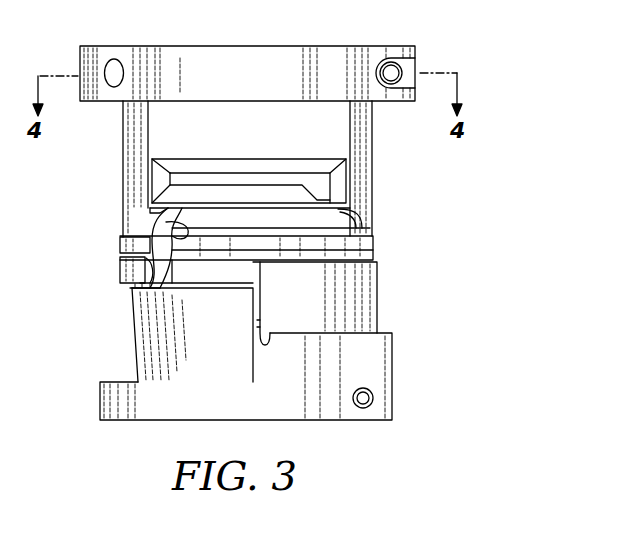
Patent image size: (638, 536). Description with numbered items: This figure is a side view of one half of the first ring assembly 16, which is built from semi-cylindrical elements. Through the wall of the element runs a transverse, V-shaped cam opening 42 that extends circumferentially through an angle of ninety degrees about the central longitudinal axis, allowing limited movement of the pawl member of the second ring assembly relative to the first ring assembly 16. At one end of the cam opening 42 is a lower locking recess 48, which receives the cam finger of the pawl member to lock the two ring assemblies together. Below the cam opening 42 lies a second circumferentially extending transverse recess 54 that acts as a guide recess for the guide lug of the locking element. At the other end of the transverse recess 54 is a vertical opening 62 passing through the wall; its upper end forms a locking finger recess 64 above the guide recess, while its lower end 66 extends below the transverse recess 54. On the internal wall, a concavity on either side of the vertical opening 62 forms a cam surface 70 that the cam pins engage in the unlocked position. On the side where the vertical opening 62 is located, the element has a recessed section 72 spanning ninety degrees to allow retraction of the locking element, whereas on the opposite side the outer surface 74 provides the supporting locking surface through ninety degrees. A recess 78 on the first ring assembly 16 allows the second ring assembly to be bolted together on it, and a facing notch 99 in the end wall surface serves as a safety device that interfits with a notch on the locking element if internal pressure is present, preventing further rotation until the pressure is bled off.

The first ring assembly 16 is at (347, 67).
The cam opening 42 is at (235, 180).
The lower locking recess 48 is at (340, 187).
The transverse recess 54 is at (330, 218).
The vertical opening 62 is at (150, 245).
The locking finger recess 64 is at (150, 218).
The lower end of vertical opening 66 is at (158, 287).
The cam surface 70 is at (172, 228).
The recessed section 72 is at (138, 360).
The outer surface 74 is at (360, 313).
The recess 78 is at (386, 156).
The facing notch 99 is at (265, 340).